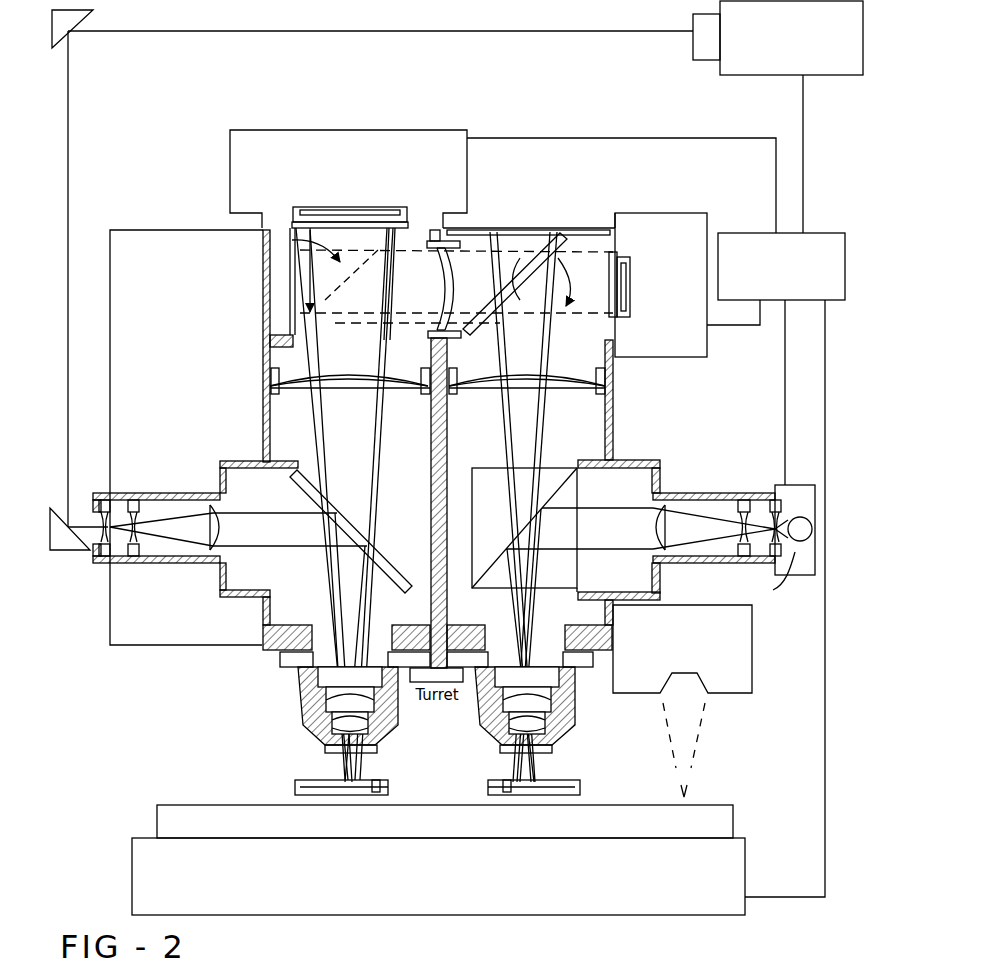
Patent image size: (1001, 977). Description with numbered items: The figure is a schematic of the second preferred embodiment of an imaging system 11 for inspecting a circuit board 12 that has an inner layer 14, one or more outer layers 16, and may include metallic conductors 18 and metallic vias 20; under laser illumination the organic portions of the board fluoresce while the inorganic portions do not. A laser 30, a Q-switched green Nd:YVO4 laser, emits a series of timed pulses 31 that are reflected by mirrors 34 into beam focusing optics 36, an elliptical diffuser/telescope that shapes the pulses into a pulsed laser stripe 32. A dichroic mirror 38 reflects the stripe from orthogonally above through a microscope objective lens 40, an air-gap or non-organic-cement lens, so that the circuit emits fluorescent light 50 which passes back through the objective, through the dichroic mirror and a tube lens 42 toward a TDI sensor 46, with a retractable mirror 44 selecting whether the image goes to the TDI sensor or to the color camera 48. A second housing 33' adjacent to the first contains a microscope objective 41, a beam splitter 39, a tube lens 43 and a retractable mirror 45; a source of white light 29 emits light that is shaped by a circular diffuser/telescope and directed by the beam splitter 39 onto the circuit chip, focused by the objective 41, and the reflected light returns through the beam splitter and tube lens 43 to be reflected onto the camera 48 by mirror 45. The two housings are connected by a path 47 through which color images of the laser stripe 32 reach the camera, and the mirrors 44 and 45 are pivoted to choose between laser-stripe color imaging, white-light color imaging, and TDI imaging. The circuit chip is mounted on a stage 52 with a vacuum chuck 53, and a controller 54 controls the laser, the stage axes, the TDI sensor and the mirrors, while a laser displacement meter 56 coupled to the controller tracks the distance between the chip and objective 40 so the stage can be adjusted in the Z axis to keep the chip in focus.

The imaging system 11 is at (158, 652).
The circuit board 12 is at (727, 796).
The inner layer 14 is at (580, 787).
The outer layer 16 is at (687, 786).
The metallic conductors 18 is at (297, 797).
The metallic vias 20 is at (297, 778).
The source of white light 29 is at (798, 573).
The laser 30 is at (753, 66).
The pulses 31 is at (455, 31).
The pulsed laser stripe 32 is at (282, 530).
The second housing 33' is at (642, 400).
The mirrors 34 is at (74, 33).
The beam focusing optics 36 is at (156, 483).
The dichroic mirror 38 is at (356, 624).
The beam splitter 39 is at (560, 498).
The microscope objective lens 40 is at (296, 709).
The microscope objective 41 is at (563, 721).
The tube lens 42 is at (263, 374).
The tube lens 43 is at (614, 386).
The retractable mirror 44 is at (335, 290).
The retractable mirror 45 is at (566, 234).
The TDI sensor 46 is at (348, 179).
The path 47 is at (476, 272).
The color camera 48 is at (658, 285).
The fluorescent light 50 is at (372, 453).
The stage 52 is at (730, 868).
The vacuum chuck 53 is at (722, 828).
The controller 54 is at (781, 266).
The laser displacement meter 56 is at (682, 649).